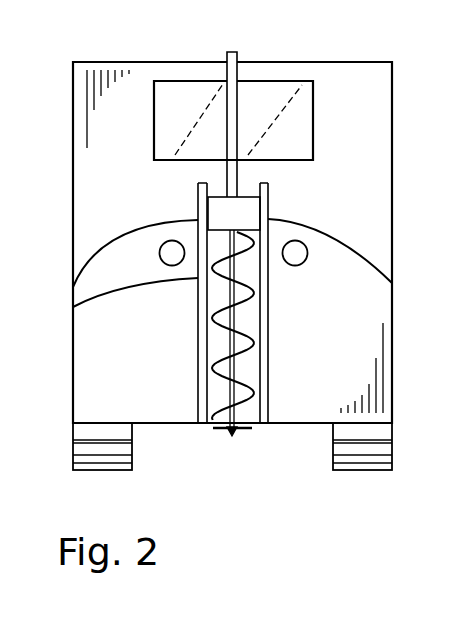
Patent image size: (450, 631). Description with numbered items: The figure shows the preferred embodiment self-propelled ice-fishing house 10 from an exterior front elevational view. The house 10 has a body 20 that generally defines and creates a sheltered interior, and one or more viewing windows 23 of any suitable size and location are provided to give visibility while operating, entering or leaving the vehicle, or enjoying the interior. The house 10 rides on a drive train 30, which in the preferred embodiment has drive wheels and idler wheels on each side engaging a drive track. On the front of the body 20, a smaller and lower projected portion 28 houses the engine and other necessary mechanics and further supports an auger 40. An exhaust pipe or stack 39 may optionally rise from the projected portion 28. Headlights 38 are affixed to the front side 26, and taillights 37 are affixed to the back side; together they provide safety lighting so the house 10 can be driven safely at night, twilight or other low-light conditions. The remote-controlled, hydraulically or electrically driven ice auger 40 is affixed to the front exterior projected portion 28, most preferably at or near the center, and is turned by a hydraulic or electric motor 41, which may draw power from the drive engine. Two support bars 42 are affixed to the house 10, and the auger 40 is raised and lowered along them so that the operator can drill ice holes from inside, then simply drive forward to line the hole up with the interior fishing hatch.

The self-propelled ice-fishing house 10 is at (346, 51).
The body 20 is at (393, 103).
The viewing windows 23 is at (163, 108).
The front side 26 is at (324, 195).
The projected portion 28 is at (315, 360).
The drive train 30 is at (74, 448).
The taillights 37 is at (449, 372).
The headlights 38 is at (160, 253).
The exhaust pipe or stack 39 is at (237, 55).
The auger 40 is at (222, 448).
The motor 41 is at (220, 224).
The support bars 42 is at (73, 308).